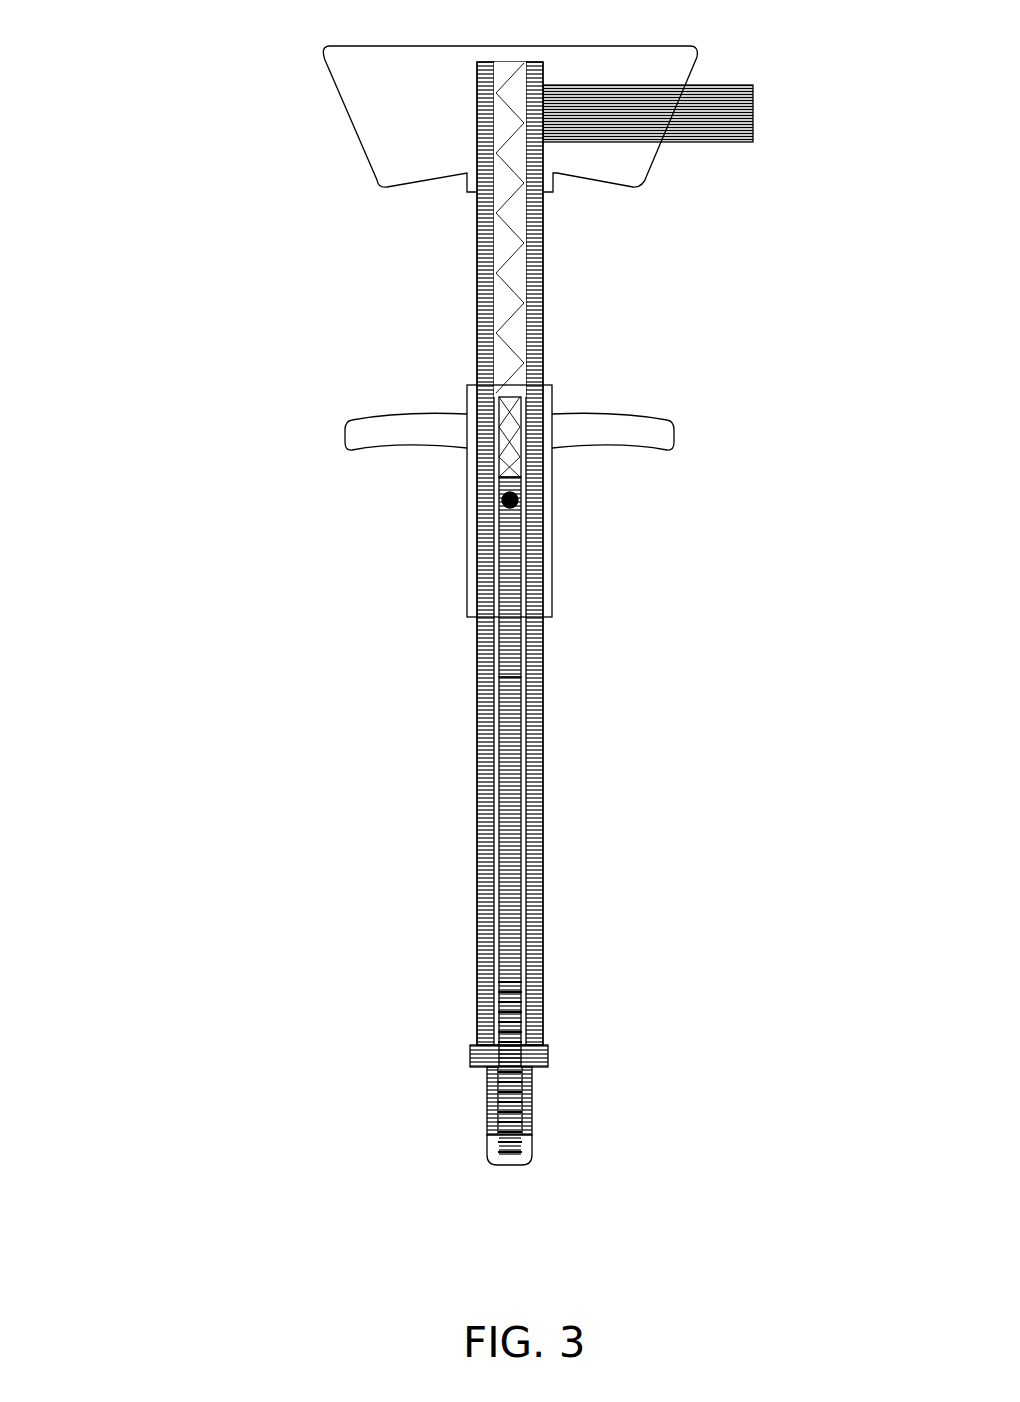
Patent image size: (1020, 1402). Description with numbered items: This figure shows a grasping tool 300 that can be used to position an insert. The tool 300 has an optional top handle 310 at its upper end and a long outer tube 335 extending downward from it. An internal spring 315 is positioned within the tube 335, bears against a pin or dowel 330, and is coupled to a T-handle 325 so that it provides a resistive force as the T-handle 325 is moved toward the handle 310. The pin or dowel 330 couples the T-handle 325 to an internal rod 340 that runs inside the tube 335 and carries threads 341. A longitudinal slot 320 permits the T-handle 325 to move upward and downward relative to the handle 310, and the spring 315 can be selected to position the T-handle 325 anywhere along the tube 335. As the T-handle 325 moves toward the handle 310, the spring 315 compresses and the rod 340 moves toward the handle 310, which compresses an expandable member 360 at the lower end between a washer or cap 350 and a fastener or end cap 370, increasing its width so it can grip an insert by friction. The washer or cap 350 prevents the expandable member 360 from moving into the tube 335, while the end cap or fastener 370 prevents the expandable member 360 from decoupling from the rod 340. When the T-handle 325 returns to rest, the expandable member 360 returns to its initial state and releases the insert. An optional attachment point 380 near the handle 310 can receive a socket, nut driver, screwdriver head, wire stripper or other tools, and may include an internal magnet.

The tool 300 is at (213, 152).
The top handle 310 is at (700, 63).
The internal spring 315 is at (522, 317).
The longitudinal slot 320 is at (523, 397).
The T-handle 325 is at (675, 437).
The pin or dowel 330 is at (518, 500).
The outer tube 335 is at (545, 860).
The internal rod 340 is at (523, 978).
The threads 341 is at (508, 1005).
The washer or cap 350 is at (556, 1052).
The expandable member 360 is at (535, 1098).
The fastener or end cap 370 is at (535, 1162).
The attachment point 380 is at (743, 112).